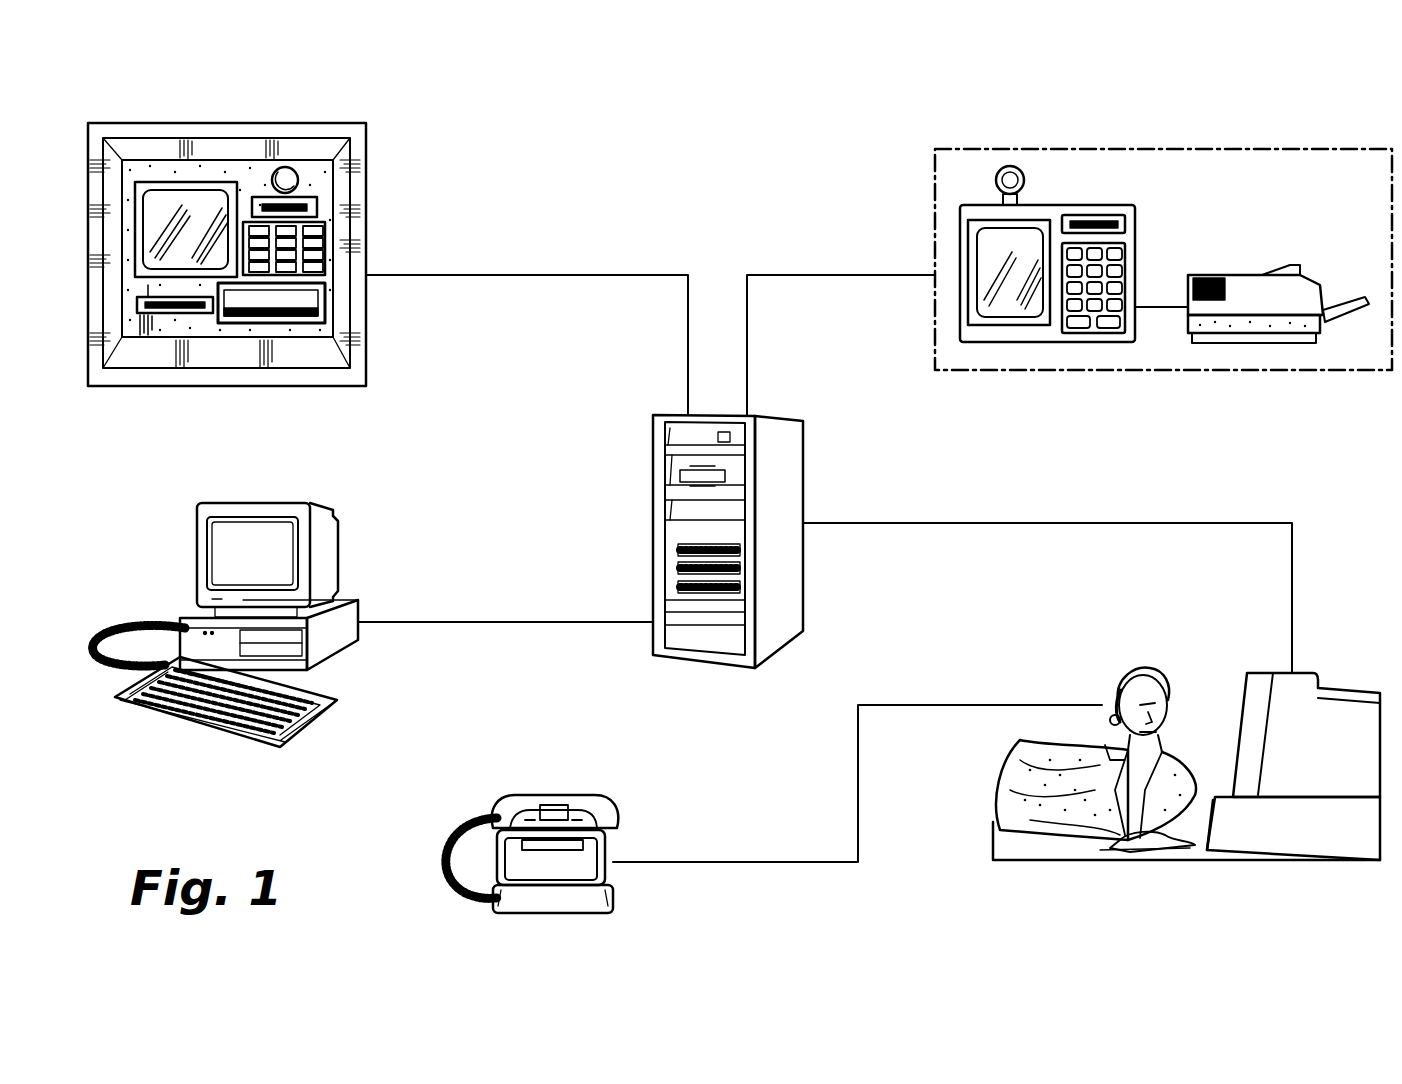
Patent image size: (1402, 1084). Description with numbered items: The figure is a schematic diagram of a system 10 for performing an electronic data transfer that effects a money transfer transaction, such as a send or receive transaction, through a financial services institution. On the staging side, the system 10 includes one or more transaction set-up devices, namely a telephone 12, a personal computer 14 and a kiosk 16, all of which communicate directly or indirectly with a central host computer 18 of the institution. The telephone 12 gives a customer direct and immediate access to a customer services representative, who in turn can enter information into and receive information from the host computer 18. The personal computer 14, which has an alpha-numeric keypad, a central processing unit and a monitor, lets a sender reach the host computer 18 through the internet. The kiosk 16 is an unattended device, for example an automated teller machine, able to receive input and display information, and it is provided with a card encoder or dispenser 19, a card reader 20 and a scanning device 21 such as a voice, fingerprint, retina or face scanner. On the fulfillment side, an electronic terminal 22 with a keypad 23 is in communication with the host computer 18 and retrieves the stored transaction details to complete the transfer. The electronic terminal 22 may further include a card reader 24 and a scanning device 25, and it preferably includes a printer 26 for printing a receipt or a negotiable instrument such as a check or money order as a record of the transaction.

The system 10 is at (356, 88).
The telephone 12 is at (648, 803).
The personal computer 14 is at (380, 555).
The kiosk 16 is at (367, 257).
The host computer 18 is at (803, 460).
The card encoder or dispenser 19 is at (325, 310).
The card reader 20 is at (318, 208).
The scanning device 21 is at (298, 176).
The electronic terminal 22 is at (928, 205).
The keypad 23 is at (1043, 343).
The card reader 24 is at (1113, 213).
The scanning device 25 is at (1018, 168).
The printer 26 is at (1233, 343).